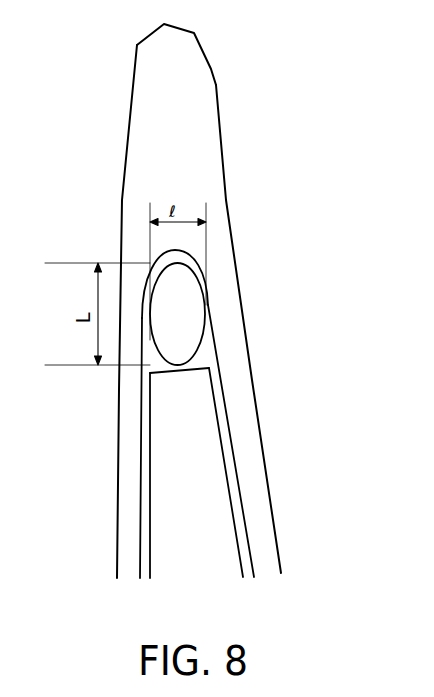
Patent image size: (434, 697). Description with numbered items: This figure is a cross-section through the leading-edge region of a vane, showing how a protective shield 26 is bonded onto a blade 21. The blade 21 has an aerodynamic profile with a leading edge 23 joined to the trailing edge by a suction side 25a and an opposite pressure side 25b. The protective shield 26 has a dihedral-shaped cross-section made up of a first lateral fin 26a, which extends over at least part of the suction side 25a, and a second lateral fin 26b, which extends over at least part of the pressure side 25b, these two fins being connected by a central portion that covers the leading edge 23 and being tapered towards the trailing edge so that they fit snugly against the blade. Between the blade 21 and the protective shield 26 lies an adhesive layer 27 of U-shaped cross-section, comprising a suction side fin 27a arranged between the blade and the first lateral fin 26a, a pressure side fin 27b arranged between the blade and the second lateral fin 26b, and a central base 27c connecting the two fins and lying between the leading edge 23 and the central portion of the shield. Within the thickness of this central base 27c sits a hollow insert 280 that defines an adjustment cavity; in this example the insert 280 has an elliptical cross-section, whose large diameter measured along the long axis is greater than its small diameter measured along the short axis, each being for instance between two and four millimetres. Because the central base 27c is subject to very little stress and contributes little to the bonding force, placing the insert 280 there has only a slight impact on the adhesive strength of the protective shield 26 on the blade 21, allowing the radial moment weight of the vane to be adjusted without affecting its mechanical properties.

The blade 21 is at (209, 301).
The leading edge 23 is at (207, 473).
The suction side 25a is at (148, 470).
The pressure side 25b is at (228, 478).
The protective shield 26 is at (212, 301).
The first lateral fin 26a is at (130, 518).
The second lateral fin 26b is at (255, 524).
The adhesive layer 27 is at (209, 414).
The suction side fin 27a is at (148, 565).
The pressure side fin 27b is at (241, 549).
The central base 27c is at (207, 358).
The insert 280 is at (206, 305).